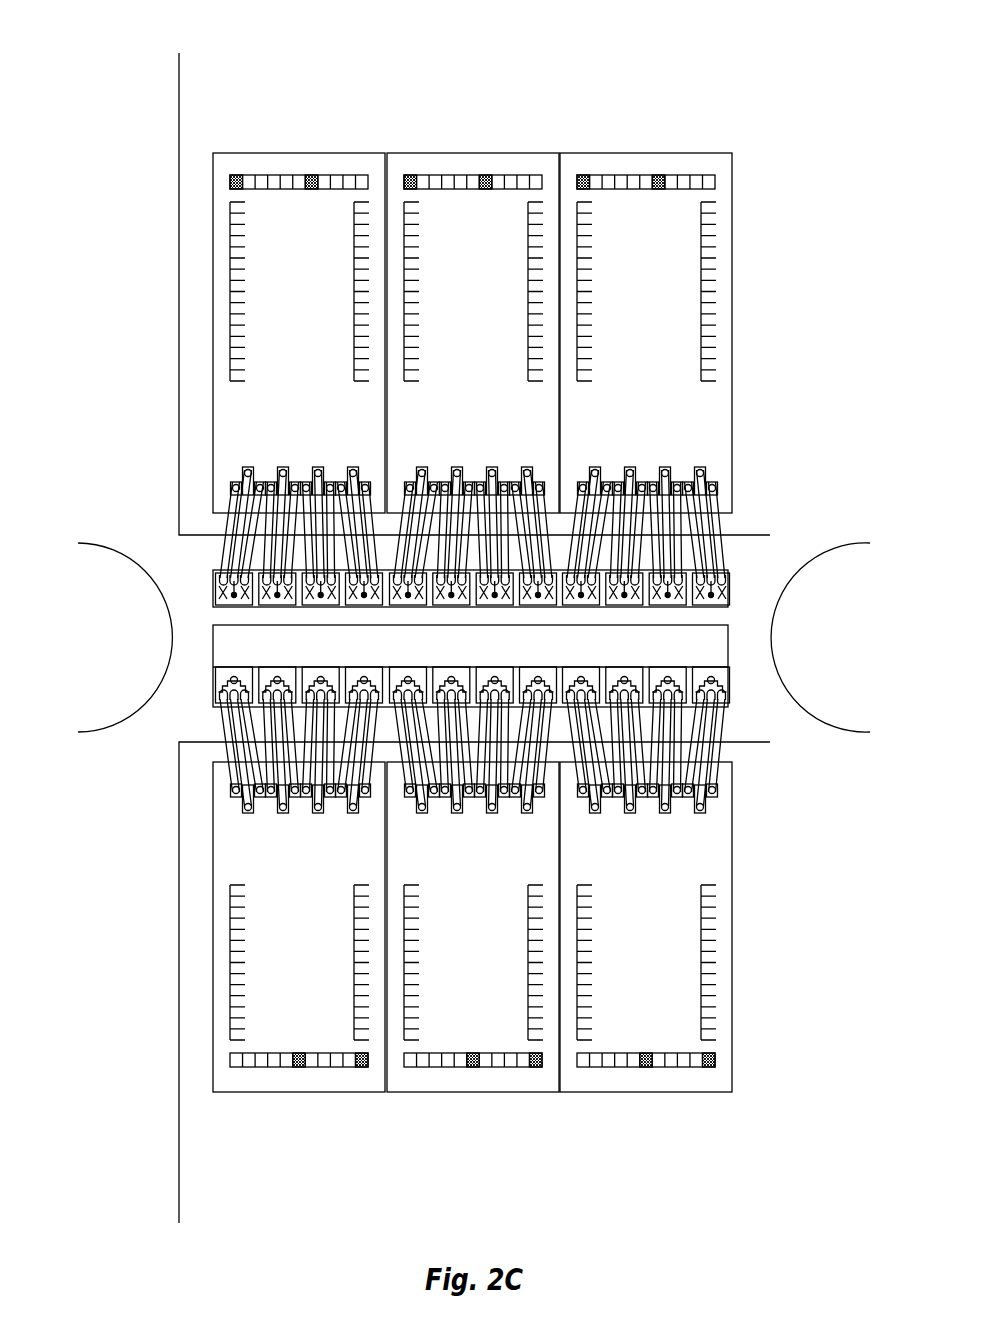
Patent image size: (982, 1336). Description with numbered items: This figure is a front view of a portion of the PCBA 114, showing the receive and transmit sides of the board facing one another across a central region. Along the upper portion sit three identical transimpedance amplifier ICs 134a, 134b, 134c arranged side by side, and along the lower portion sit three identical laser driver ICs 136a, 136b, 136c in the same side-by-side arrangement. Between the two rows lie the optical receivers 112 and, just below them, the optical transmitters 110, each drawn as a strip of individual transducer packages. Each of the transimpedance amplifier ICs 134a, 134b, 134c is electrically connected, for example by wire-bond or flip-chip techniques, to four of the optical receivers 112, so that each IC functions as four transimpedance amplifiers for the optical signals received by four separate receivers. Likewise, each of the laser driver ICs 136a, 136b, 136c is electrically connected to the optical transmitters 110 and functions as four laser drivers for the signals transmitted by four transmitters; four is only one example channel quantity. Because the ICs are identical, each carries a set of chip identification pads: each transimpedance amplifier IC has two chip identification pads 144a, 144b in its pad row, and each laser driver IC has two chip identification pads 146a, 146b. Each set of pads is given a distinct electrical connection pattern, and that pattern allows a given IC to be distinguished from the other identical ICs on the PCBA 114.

The PCBA 114 is at (136, 36).
The optical receivers 112 is at (202, 590).
The optical transmitters 110 is at (202, 683).
The transimpedance amplifier IC 134a is at (223, 153).
The transimpedance amplifier IC 134b is at (397, 153).
The transimpedance amplifier IC 134c is at (570, 153).
The laser driver IC 136a is at (373, 1092).
The laser driver IC 136b is at (547, 1092).
The laser driver IC 136c is at (720, 1092).
The chip identification pad 144a is at (236, 175).
The chip identification pad 144b is at (309, 175).
The chip identification pad 146a is at (362, 1067).
The chip identification pad 146b is at (295, 1067).